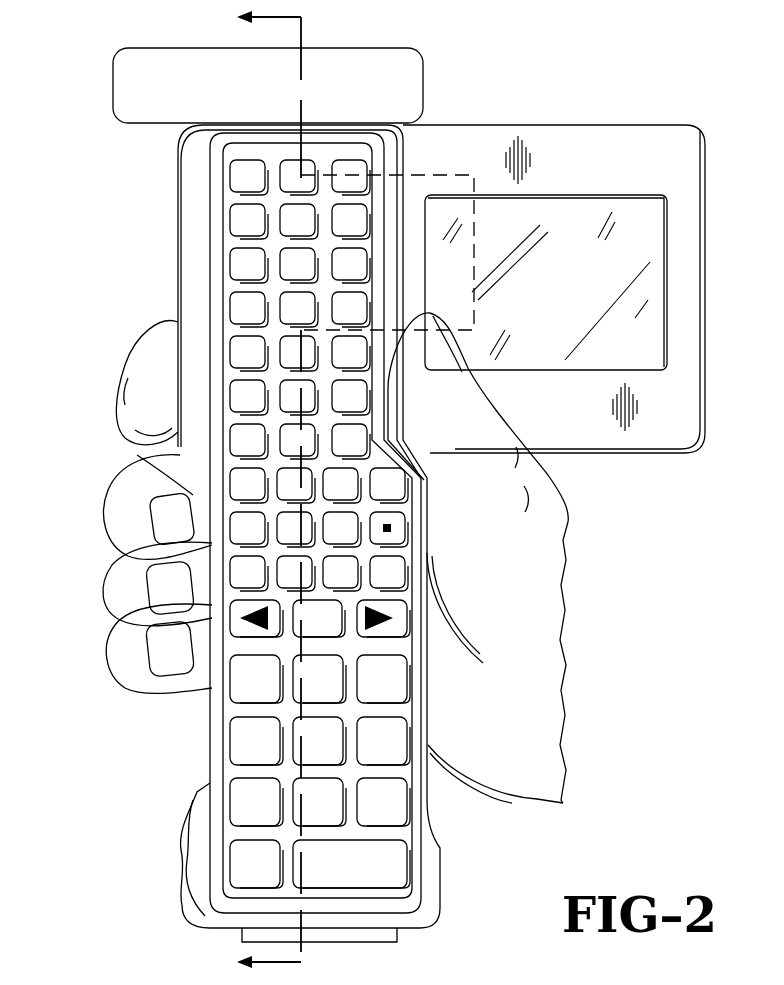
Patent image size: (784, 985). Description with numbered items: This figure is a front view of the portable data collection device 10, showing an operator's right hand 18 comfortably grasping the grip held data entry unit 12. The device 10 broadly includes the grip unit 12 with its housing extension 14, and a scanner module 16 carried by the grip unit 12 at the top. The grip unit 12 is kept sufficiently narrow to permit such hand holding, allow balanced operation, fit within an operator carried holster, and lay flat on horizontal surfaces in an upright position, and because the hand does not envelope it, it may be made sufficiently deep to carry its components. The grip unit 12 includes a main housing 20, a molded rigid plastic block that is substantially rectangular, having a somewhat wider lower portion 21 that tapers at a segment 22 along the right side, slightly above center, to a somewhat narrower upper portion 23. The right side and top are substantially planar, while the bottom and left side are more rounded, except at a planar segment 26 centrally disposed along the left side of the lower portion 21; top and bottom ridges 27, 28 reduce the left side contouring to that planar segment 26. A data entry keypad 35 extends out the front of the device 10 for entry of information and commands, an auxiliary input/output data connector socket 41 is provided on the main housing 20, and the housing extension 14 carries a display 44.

The portable device 10 is at (82, 179).
The grip held data entry unit 12 is at (266, 553).
The housing extension 14 is at (588, 263).
The scanner module 16 is at (433, 88).
The right hand 18 is at (339, 558).
The main housing 20 is at (177, 302).
The lower portion 21 is at (423, 712).
The segment 22 is at (407, 443).
The upper portion 23 is at (385, 265).
The planar segment 26 is at (210, 726).
The top ridge 27 is at (193, 492).
The bottom ridge 28 is at (200, 792).
The data entry keypad 35 is at (233, 217).
The auxiliary input/output data connector socket 41 is at (383, 942).
The display 44 is at (645, 292).